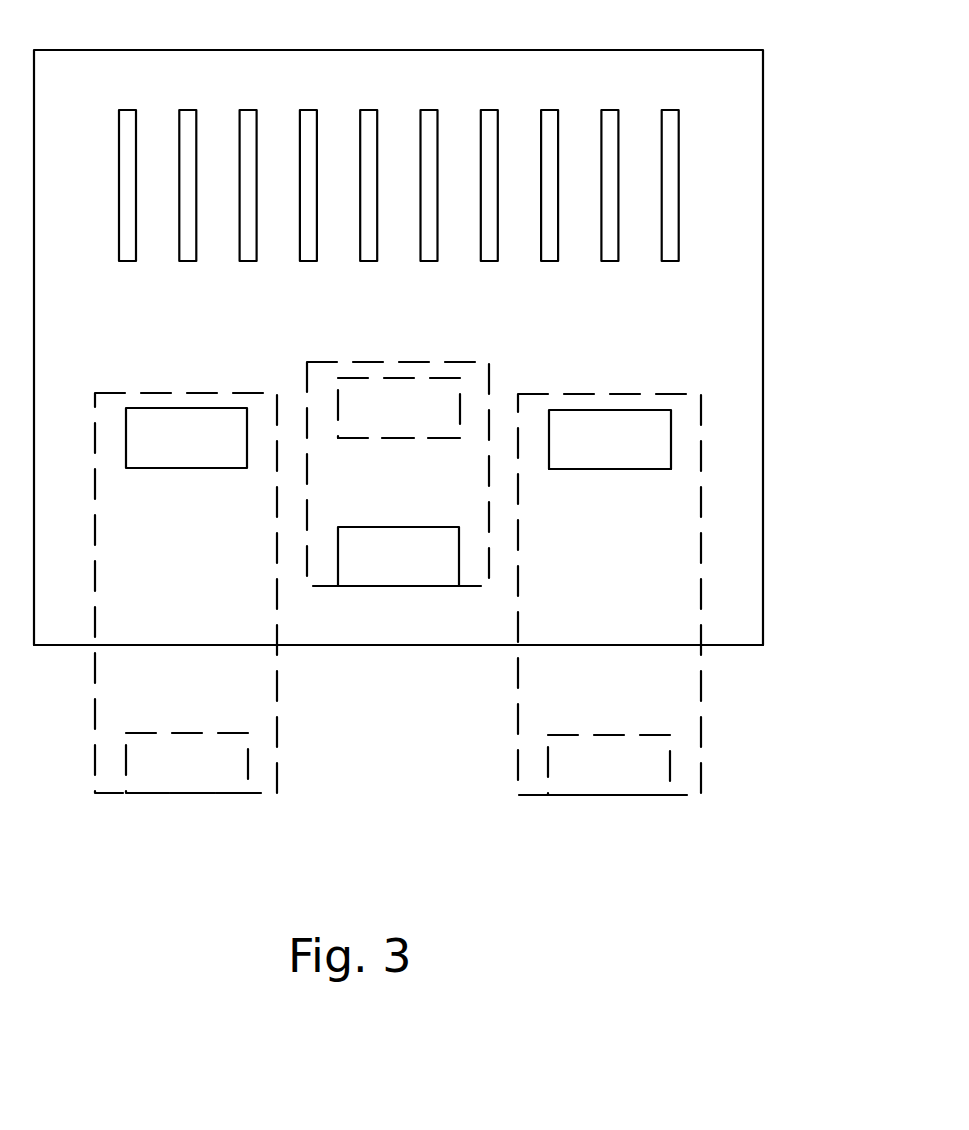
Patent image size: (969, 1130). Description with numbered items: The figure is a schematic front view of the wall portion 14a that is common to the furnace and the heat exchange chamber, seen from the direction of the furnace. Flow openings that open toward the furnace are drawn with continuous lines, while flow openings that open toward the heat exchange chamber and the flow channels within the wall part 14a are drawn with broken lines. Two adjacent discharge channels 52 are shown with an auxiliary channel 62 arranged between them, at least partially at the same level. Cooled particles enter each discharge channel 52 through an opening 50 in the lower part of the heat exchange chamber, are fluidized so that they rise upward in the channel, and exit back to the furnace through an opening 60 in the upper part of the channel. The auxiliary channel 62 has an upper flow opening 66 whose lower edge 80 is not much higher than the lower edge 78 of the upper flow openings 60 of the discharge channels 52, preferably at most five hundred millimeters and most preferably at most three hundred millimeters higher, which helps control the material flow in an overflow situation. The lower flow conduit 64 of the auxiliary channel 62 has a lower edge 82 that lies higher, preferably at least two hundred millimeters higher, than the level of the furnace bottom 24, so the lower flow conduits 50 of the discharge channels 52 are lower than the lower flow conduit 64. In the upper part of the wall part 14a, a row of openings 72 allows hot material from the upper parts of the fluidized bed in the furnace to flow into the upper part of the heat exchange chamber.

The wall portion 14a is at (720, 343).
The openings 72 is at (670, 180).
The discharge channel 52 is at (112, 507).
The auxiliary channel 62 is at (325, 473).
The upper flow opening 66 is at (423, 392).
The lower edge 80 is at (392, 440).
The opening 60 is at (660, 434).
The lower edge 78 is at (650, 470).
The lower flow conduit 64 is at (376, 568).
The lower edge 82 is at (405, 588).
The furnace bottom 24 is at (716, 647).
The opening 50 is at (648, 770).